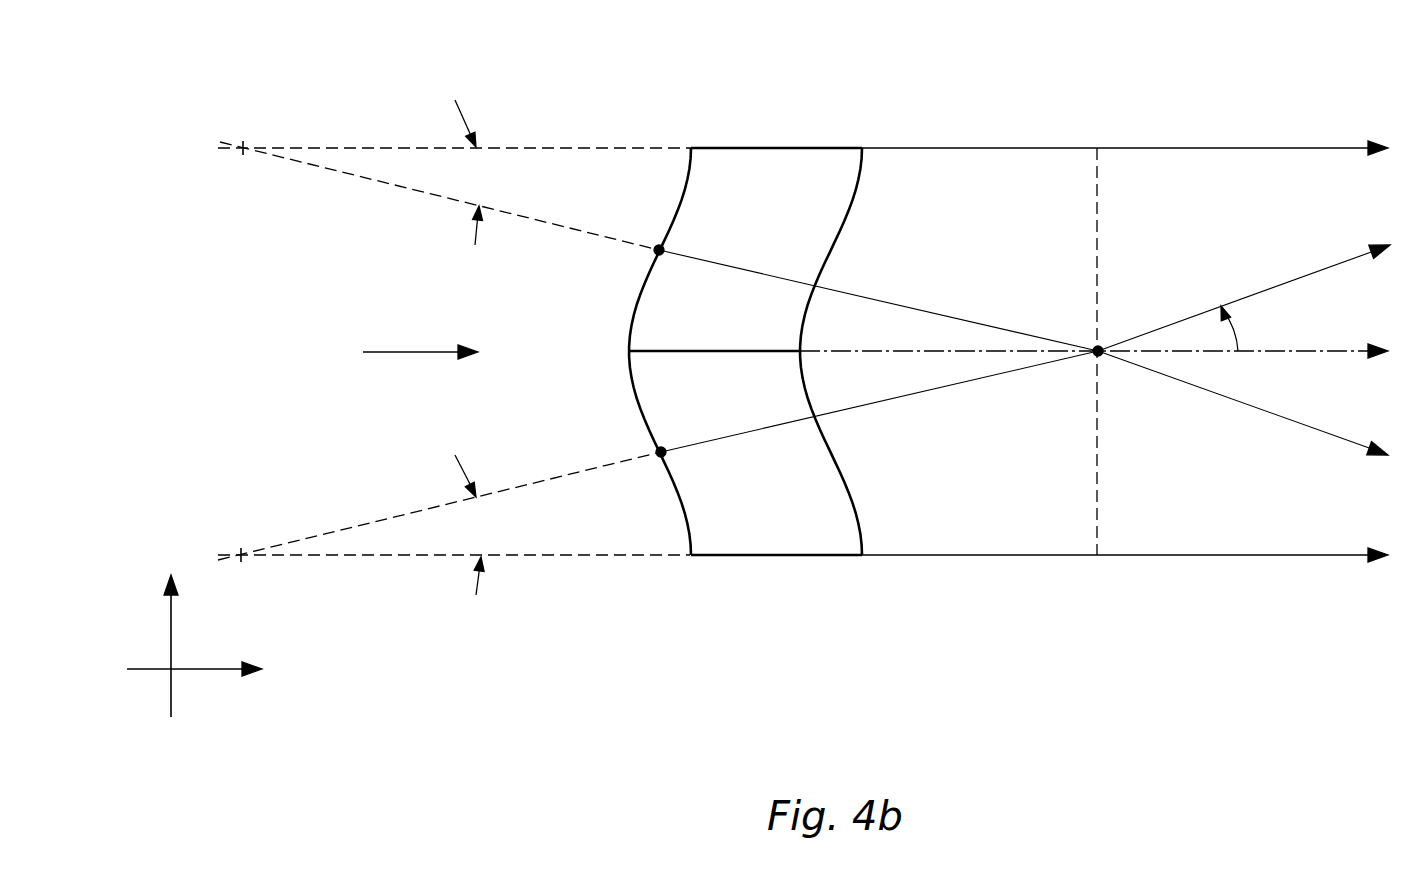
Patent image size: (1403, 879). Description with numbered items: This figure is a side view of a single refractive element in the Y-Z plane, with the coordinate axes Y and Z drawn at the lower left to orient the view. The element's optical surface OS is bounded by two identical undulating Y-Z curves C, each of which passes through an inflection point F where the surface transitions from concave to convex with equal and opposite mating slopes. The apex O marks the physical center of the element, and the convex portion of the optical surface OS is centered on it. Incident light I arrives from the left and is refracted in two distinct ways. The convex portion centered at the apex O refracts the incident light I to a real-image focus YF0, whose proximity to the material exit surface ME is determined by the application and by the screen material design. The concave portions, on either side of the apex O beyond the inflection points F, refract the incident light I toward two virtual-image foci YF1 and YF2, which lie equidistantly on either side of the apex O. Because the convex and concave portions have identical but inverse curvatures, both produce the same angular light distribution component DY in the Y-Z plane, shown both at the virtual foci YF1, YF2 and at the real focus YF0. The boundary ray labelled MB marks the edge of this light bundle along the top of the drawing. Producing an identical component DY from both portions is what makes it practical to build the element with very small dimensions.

The virtual-image focus YF1 is at (244, 148).
The virtual-image focus YF2 is at (244, 556).
The real-image focus YF0 is at (1096, 354).
The undulating Y-Z curve C is at (687, 180).
The inflection point F is at (659, 250).
The apex O is at (629, 351).
The optical surface OS is at (746, 556).
The marginal ray bundle boundary MB is at (1000, 165).
The material exit surface ME is at (1097, 183).
The light distribution solid angle component DY is at (872, 347).
The incident light I is at (420, 335).
The Z coordinate axis Z is at (184, 671).
The Y coordinate axis Y is at (173, 663).